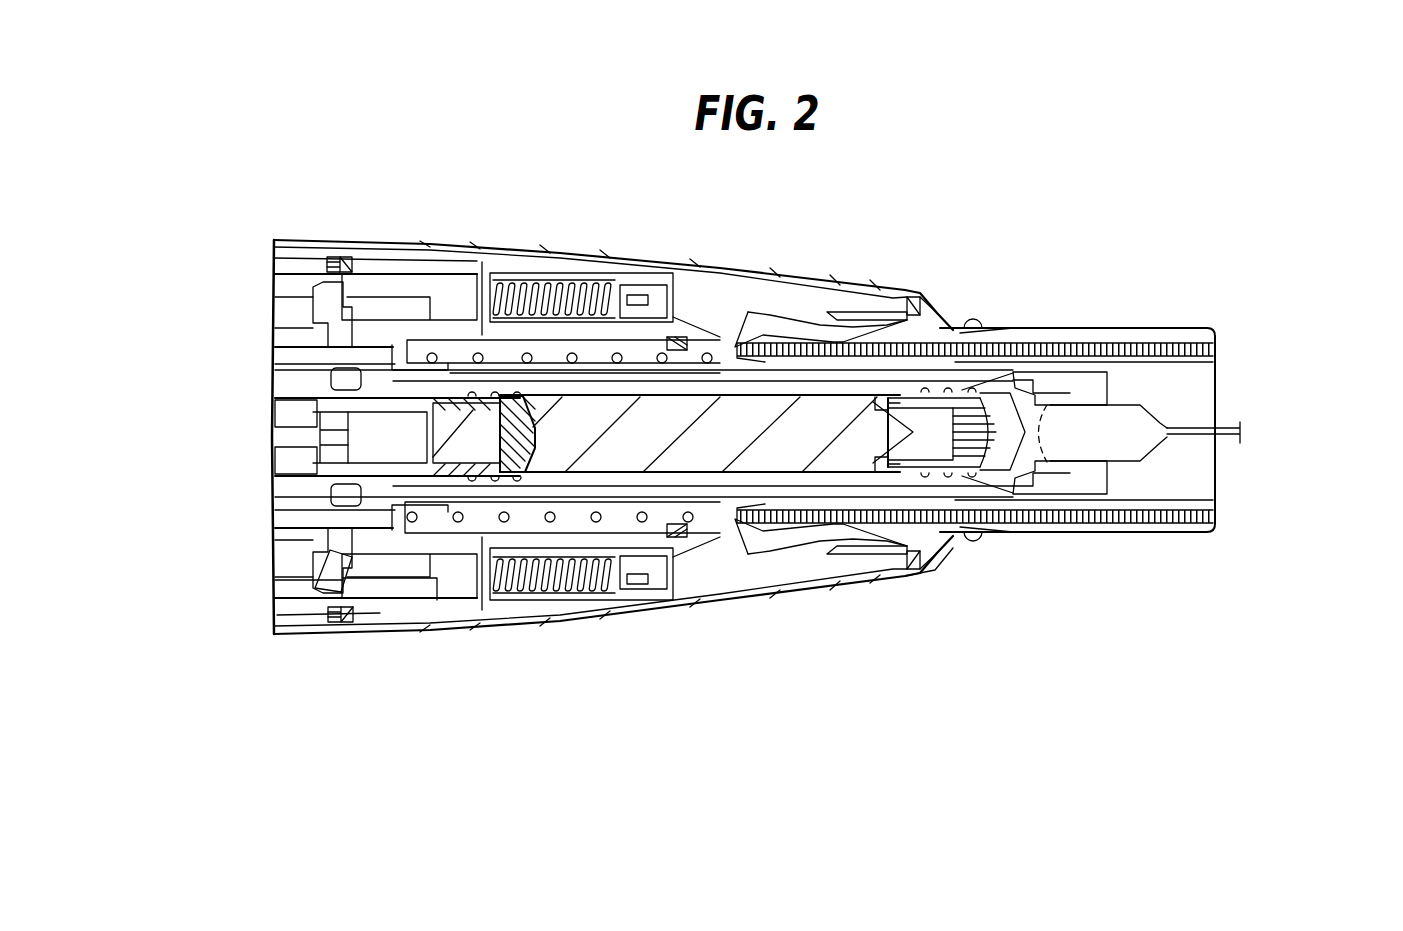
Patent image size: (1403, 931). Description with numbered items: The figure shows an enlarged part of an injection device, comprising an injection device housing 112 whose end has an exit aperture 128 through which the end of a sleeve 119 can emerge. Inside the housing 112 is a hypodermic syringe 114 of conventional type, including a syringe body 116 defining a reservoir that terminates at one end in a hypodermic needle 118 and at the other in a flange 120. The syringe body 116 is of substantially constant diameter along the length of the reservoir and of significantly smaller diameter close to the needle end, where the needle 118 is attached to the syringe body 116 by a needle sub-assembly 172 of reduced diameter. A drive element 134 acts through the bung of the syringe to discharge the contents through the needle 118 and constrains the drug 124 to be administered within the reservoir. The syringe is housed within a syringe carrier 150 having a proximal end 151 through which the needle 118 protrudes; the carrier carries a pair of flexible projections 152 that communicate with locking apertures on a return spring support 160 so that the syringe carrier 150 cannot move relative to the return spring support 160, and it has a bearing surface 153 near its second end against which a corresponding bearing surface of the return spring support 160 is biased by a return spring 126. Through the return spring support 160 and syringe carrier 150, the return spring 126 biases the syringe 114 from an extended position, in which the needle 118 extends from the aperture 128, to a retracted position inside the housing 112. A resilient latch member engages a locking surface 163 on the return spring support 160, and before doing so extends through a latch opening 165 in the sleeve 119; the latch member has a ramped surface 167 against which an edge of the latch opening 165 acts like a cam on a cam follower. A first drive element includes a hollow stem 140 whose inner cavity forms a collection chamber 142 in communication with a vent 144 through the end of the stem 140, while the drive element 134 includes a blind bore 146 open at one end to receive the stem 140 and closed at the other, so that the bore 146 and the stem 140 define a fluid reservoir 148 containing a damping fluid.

The injection device housing 112 is at (428, 250).
The bearing surface 153 is at (390, 350).
The flexible projections 152 is at (482, 375).
The return spring 126 is at (618, 350).
The return spring support 160 is at (720, 370).
The ramped surface 167 is at (758, 330).
The hypodermic syringe 114 is at (962, 390).
The syringe carrier 150 is at (1018, 380).
The proximal end 151 is at (1025, 398).
The needle sub-assembly 172 is at (1110, 405).
The sleeve 119 is at (1225, 357).
The hypodermic needle 118 is at (1222, 437).
The exit aperture 128 is at (1263, 512).
The hollow stem 140 is at (270, 410).
The collection chamber 142 is at (275, 445).
The vent 144 is at (335, 457).
The flange 120 is at (340, 515).
The fluid reservoir 148 is at (320, 560).
The blind bore 146 is at (405, 470).
The drive element 134 is at (560, 460).
The latch opening 165 is at (725, 515).
The syringe body 116 is at (812, 478).
The locking surface 163 is at (936, 520).
The drug 124 is at (1003, 470).